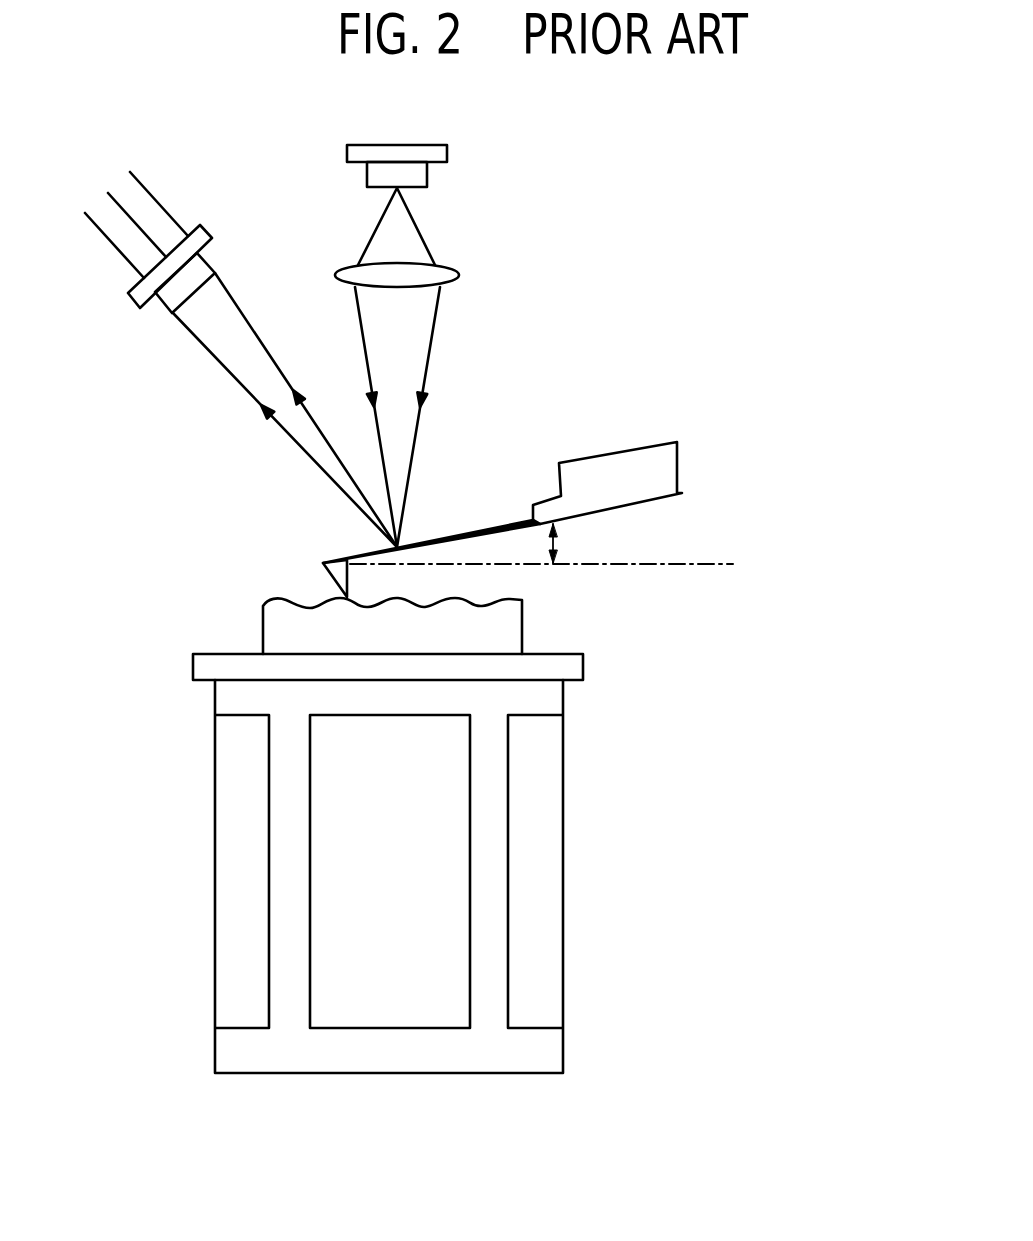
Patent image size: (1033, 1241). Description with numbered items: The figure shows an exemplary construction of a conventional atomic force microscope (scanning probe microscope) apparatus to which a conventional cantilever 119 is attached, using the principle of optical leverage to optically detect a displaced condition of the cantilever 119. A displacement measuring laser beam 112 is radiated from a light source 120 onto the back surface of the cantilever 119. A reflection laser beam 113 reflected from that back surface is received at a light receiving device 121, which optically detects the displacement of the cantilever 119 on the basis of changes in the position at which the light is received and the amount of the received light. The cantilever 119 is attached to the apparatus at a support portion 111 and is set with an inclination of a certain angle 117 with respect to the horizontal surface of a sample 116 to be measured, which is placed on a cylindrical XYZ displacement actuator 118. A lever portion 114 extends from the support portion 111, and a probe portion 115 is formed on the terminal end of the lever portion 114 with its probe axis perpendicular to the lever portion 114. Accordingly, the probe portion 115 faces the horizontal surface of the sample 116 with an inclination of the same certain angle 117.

The support portion 111 is at (678, 468).
The displacement measuring laser beam 112 is at (432, 333).
The reflection laser beam 113 is at (207, 343).
The lever portion 114 is at (445, 537).
The probe portion 115 is at (322, 563).
The sample 116 is at (523, 622).
The angle 117 is at (560, 542).
The cylindrical XYZ displacement actuator 118 is at (548, 757).
The cantilever 119 is at (515, 495).
The light source 120 is at (430, 173).
The light receiving device 121 is at (203, 228).